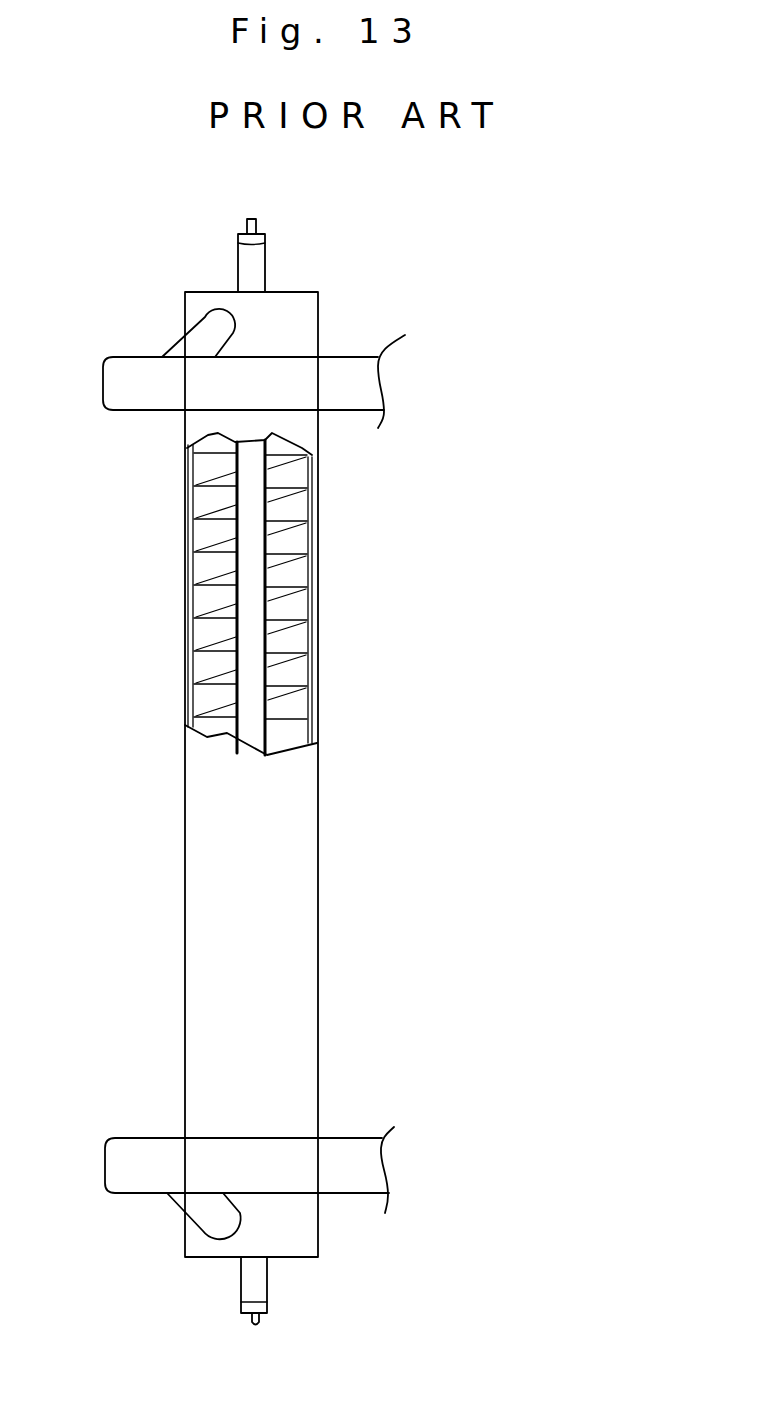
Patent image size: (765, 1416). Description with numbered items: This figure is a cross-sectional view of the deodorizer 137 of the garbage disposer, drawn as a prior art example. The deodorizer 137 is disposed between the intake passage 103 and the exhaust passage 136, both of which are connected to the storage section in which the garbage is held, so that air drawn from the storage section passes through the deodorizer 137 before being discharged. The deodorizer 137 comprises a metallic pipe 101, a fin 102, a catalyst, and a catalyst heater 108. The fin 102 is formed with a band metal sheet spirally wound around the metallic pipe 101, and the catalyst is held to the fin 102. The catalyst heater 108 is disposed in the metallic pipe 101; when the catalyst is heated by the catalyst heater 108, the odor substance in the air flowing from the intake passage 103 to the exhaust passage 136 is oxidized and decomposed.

The exhaust passage 136 is at (352, 360).
The intake passage 103 is at (347, 1140).
The deodorizer 137 is at (430, 838).
The fin 102 is at (213, 482).
The metallic pipe 101 is at (212, 602).
The catalyst heater 108 is at (268, 1287).